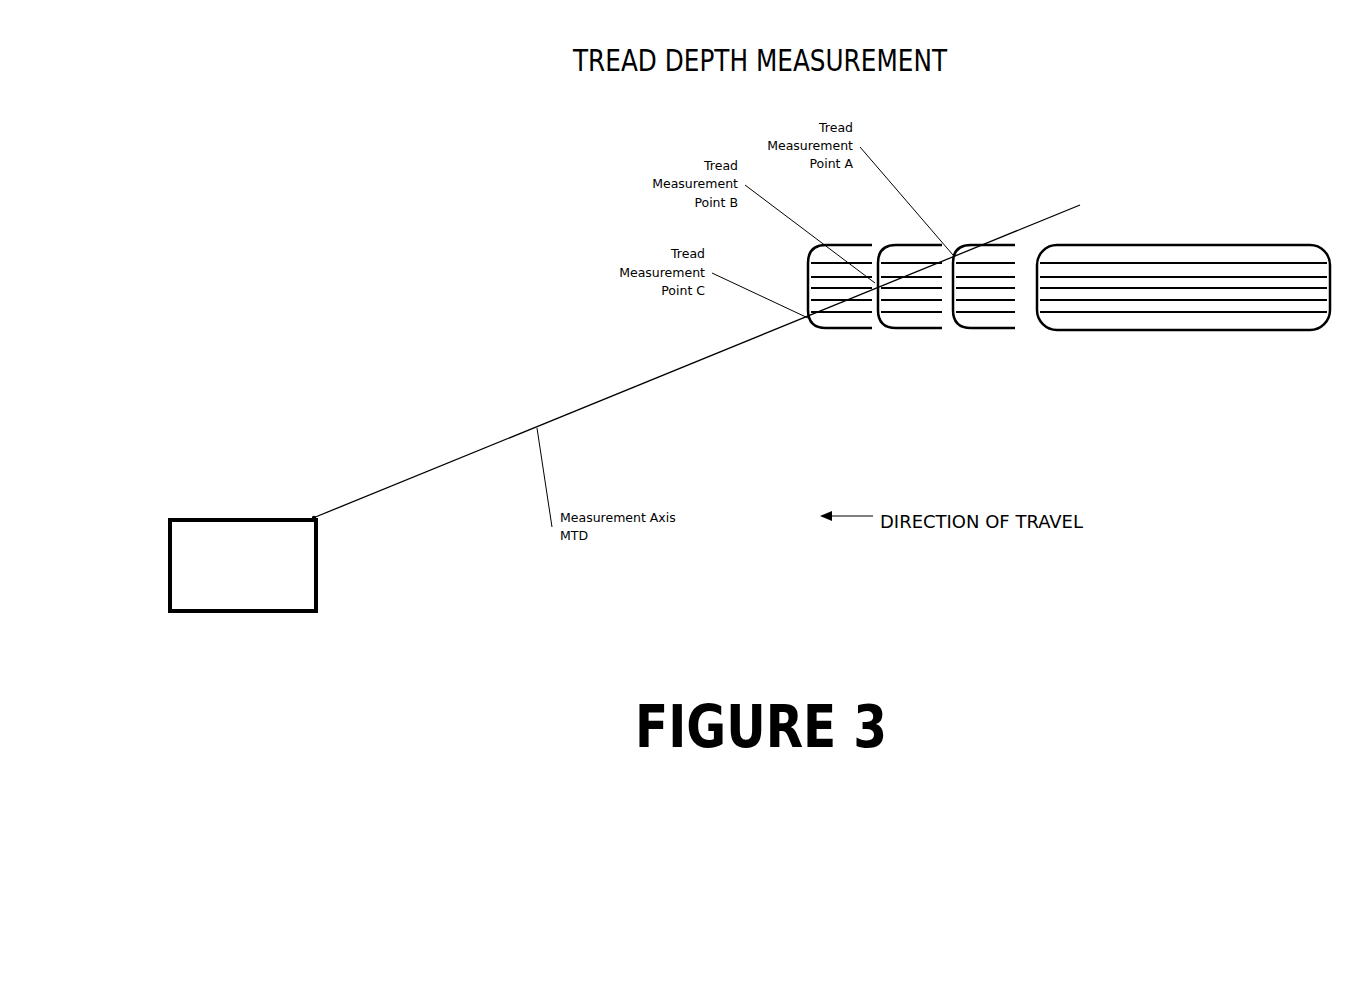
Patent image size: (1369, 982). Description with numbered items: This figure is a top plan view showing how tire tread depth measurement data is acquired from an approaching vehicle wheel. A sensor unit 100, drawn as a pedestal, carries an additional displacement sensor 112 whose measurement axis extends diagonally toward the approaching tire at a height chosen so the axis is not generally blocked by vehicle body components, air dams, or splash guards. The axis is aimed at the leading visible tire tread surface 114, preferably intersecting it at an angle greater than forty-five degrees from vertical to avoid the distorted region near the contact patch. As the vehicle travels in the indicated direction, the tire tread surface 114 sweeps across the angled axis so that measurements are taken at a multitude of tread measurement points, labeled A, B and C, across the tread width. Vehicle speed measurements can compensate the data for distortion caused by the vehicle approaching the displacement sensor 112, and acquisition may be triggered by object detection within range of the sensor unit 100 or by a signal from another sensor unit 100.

The sensor unit 100 is at (278, 589).
The displacement sensor 112 is at (313, 517).
The tire tread surface 114 is at (1212, 292).